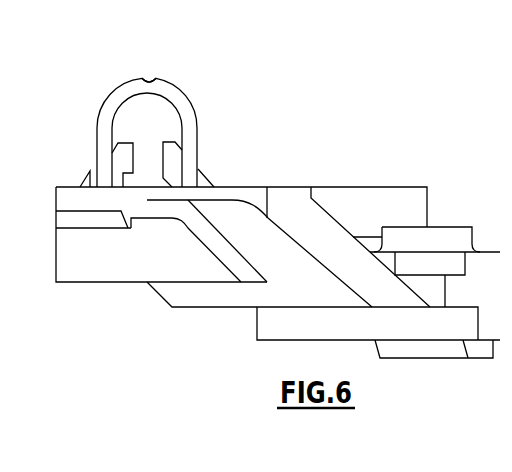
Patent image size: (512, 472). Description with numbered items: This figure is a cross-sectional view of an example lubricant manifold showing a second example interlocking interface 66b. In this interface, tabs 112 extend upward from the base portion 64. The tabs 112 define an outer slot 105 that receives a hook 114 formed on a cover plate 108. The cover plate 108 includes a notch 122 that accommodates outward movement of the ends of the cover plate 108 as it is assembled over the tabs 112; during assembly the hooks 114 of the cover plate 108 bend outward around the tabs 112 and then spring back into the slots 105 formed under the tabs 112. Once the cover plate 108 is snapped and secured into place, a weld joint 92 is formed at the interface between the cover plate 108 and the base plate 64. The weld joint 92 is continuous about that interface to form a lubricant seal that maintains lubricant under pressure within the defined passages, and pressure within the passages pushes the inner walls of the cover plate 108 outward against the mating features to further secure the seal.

The base portion 64 is at (376, 205).
The second example interlocking interface 66b is at (234, 100).
The weld joint 92 is at (84, 170).
The outer slot 105 is at (123, 174).
The cover plate 108 is at (132, 90).
The tabs 112 is at (168, 150).
The hook 114 is at (184, 178).
The notch 122 is at (154, 72).